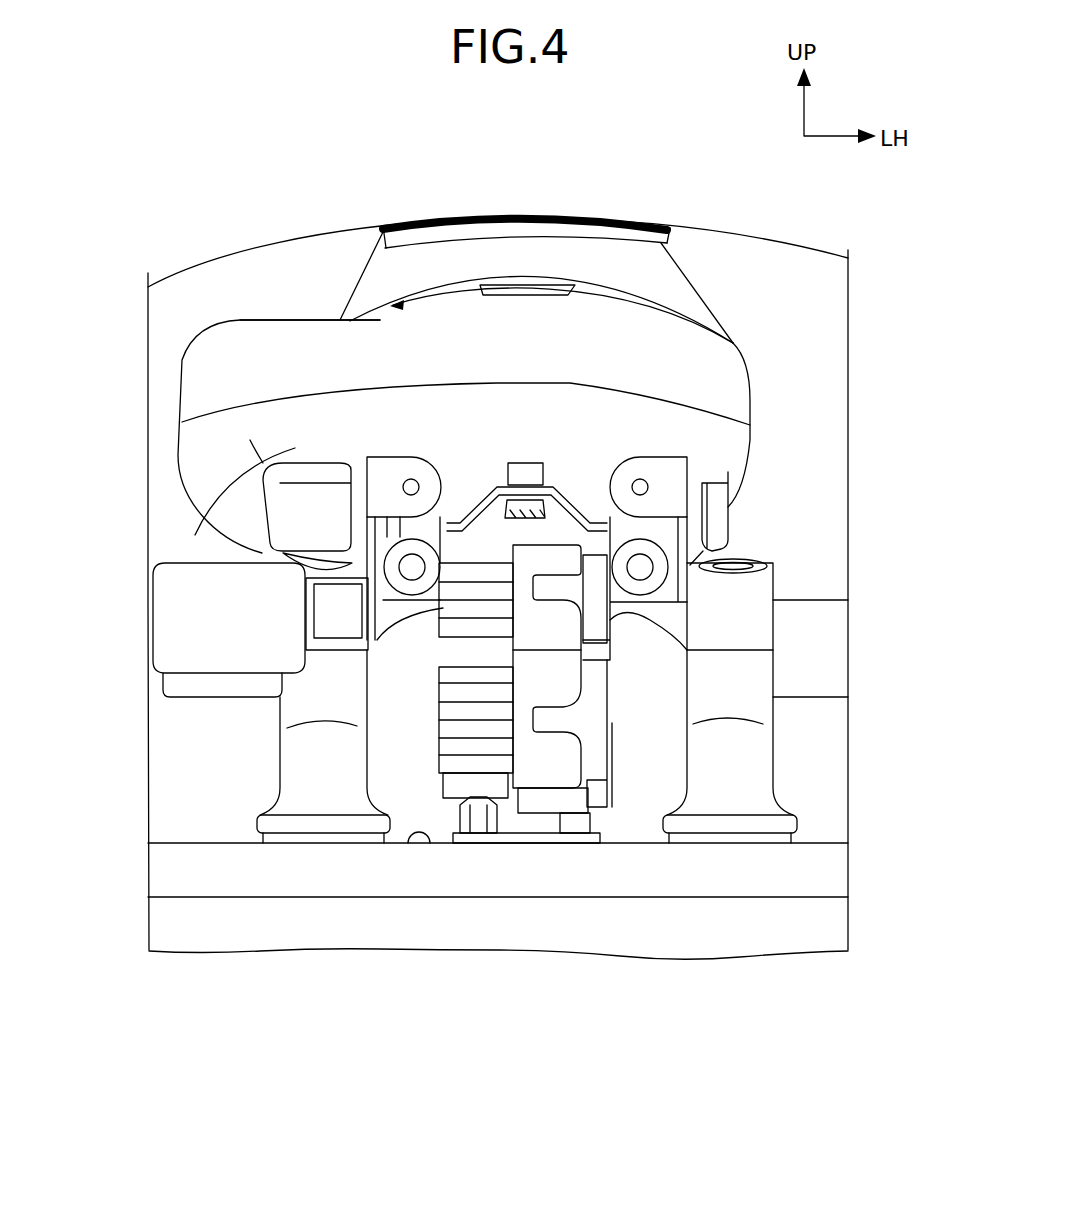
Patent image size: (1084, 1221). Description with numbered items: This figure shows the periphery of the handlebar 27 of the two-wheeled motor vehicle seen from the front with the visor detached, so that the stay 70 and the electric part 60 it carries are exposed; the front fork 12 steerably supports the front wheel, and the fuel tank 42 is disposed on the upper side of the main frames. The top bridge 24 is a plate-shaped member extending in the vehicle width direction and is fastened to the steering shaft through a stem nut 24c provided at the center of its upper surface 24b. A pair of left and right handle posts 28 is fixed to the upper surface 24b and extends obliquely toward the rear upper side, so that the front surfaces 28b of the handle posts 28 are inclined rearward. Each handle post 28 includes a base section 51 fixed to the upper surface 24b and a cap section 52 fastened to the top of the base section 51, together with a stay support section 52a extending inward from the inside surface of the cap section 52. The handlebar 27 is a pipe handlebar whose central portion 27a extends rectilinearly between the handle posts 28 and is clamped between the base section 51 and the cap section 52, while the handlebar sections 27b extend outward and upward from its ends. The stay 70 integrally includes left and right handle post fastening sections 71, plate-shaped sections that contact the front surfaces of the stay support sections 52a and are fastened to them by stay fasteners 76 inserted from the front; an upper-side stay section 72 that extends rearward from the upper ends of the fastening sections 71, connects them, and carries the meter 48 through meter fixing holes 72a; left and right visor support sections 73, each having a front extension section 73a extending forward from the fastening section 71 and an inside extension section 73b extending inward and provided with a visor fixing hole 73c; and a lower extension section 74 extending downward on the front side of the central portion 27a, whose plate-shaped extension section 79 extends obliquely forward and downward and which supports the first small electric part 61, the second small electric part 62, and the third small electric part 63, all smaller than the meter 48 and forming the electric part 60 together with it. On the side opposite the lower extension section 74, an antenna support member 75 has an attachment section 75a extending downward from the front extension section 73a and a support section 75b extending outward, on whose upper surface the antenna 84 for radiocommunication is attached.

The front fork 12 is at (302, 960).
The top bridge 24 is at (611, 962).
The upper surface of top bridge 24b is at (422, 848).
The stem nut 24c is at (500, 825).
The handlebar 27 is at (860, 607).
The central portion 27a is at (638, 700).
The handlebar section 27b is at (830, 681).
The handle post 28 is at (501, 768).
The front surface of handle post 28b is at (330, 795).
The fuel tank 42 is at (747, 237).
The meter 48 is at (303, 318).
The base section 51 is at (245, 652).
The cap section 52 is at (250, 608).
The stay support section 52a is at (290, 524).
The electric part 60 is at (252, 312).
The first small electric part 61 is at (481, 750).
The second small electric part 62 is at (503, 793).
The third small electric part 63 is at (481, 570).
The stay 70 is at (661, 448).
The handle post fastening section 71 is at (307, 601).
The upper-side stay section 72 is at (527, 344).
The meter fixing hole 72a is at (537, 478).
The visor support section 73 is at (503, 529).
The front extension section 73a is at (368, 472).
The inside extension section 73b is at (403, 470).
The visor fixing hole 73c is at (330, 506).
The lower extension section 74 is at (624, 651).
The antenna support member 75 is at (330, 655).
The attachment section 75a is at (300, 541).
The support section 75b is at (218, 688).
The stay fastener 76 is at (384, 578).
The extension section 79 is at (618, 661).
The antenna 84 is at (210, 674).